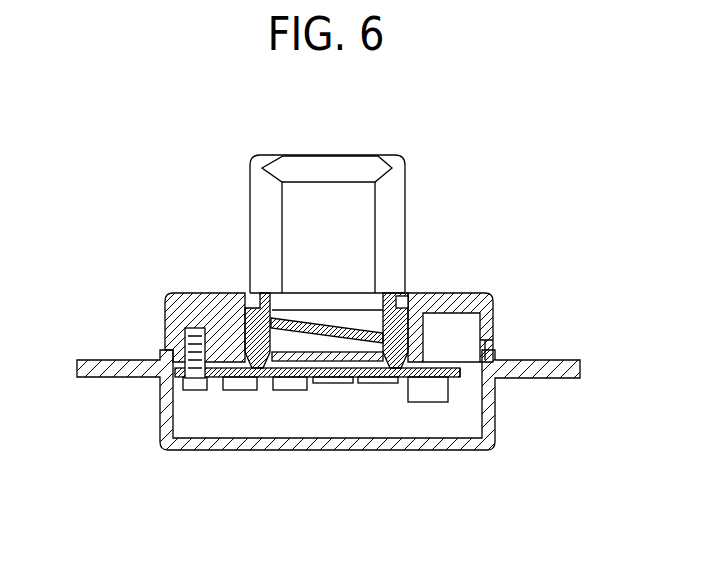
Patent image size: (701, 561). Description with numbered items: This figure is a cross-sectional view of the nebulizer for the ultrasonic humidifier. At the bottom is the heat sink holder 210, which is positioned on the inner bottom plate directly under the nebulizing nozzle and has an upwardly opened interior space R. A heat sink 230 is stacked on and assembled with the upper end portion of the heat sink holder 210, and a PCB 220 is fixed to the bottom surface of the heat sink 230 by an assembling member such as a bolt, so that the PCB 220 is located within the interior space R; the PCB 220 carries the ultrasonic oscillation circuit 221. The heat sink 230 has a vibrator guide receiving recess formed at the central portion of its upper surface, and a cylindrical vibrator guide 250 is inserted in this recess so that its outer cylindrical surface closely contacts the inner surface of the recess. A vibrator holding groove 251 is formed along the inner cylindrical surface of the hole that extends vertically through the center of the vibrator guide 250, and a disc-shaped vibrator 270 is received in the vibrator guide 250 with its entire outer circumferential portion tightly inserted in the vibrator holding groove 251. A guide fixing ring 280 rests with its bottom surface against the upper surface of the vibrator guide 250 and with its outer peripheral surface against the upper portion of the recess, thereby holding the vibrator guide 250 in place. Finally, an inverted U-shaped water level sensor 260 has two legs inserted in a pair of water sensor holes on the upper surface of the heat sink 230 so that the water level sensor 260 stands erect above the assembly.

The heat sink holder 210 is at (163, 430).
The PCB 220 is at (497, 405).
The ultrasonic oscillation circuit 221 is at (430, 400).
The heat sink 230 is at (165, 296).
The vibrator guide 250 is at (495, 293).
The vibrator holding groove 251 is at (497, 340).
The water level sensor 260 is at (400, 152).
The disc-shaped vibrator 270 is at (340, 330).
The guide fixing ring 280 is at (250, 292).
The interior space R is at (322, 422).